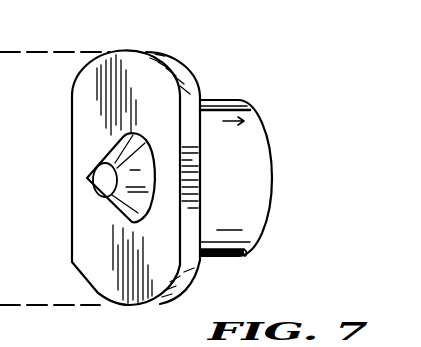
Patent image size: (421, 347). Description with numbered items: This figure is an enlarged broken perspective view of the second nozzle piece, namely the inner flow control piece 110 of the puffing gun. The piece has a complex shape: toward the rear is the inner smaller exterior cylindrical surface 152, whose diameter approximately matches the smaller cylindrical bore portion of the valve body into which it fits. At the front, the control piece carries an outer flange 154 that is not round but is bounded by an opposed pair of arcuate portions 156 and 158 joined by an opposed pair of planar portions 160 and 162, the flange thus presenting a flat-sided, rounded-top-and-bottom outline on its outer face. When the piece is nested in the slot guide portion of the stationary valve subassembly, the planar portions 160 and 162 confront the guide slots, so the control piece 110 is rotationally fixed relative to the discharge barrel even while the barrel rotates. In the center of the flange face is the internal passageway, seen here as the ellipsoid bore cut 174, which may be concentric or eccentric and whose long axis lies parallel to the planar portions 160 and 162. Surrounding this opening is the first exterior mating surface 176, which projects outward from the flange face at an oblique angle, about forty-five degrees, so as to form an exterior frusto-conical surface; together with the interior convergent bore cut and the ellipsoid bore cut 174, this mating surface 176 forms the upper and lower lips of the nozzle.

The inner flow control piece 110 is at (246, 118).
The inner smaller exterior cylindrical surface 152 is at (254, 143).
The outer flange 154 is at (190, 274).
The arcuate portion 156 is at (170, 56).
The arcuate portion 158 is at (163, 303).
The planar portion 160 is at (70, 123).
The planar portion 162 is at (186, 113).
The ellipsoid bore cut 174 is at (100, 187).
The first exterior mating surface 176 is at (143, 134).